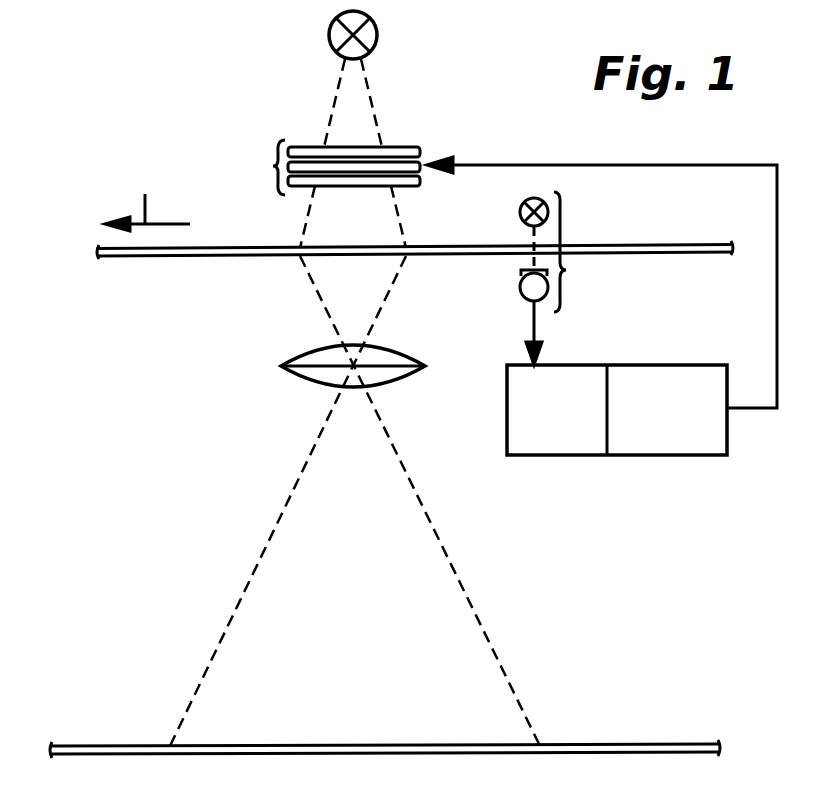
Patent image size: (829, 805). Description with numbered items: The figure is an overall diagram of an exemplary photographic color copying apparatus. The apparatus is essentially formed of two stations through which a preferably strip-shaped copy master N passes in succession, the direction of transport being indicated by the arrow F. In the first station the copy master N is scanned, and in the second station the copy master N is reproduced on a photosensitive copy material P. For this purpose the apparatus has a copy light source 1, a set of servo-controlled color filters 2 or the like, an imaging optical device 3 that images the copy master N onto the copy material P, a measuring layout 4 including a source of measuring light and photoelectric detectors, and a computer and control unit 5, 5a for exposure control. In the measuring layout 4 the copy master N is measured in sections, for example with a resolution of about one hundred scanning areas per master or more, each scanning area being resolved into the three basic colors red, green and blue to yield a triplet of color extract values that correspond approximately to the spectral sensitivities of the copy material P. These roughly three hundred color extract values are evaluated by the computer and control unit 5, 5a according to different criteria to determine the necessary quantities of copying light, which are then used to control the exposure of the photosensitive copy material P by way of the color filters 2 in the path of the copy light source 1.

The copy light source 1 is at (370, 33).
The set of servo-controlled color filters 2 is at (262, 164).
The imaging optical device 3 is at (318, 357).
The measuring layout 4 is at (569, 272).
The computer and control unit 5 is at (653, 437).
The computer and control unit 5a is at (553, 437).
The copy master N is at (222, 250).
The direction of transport F is at (147, 196).
The photosensitive copy material P is at (397, 746).